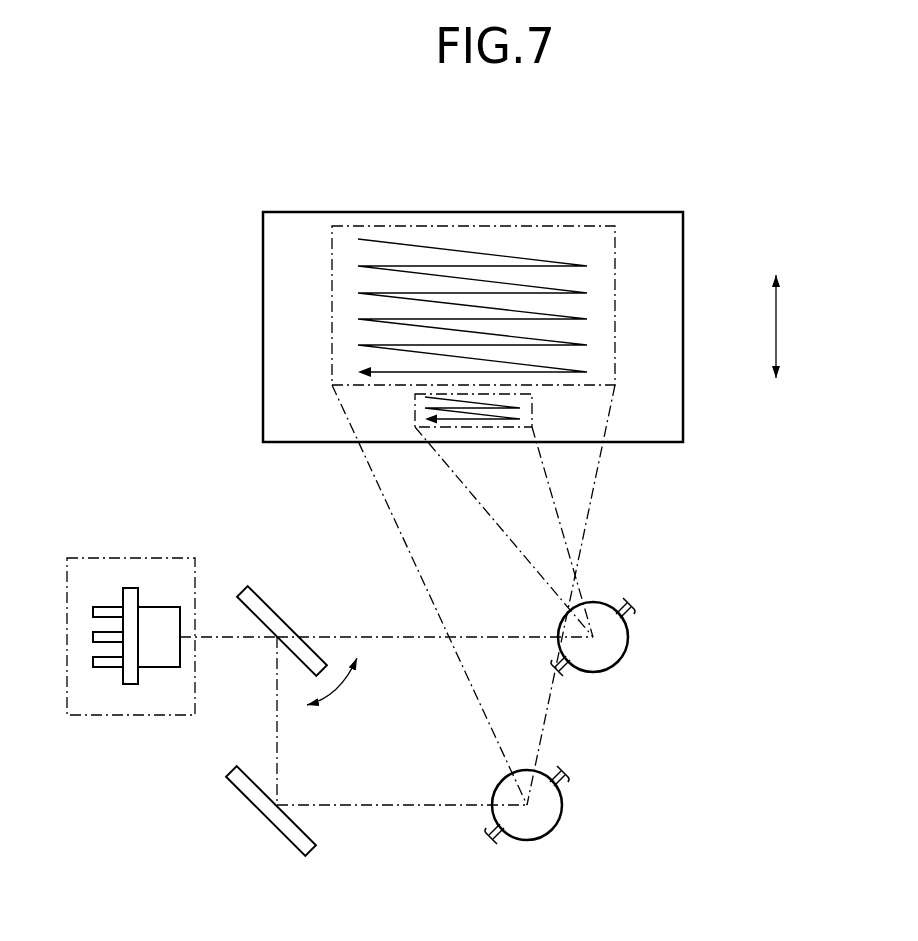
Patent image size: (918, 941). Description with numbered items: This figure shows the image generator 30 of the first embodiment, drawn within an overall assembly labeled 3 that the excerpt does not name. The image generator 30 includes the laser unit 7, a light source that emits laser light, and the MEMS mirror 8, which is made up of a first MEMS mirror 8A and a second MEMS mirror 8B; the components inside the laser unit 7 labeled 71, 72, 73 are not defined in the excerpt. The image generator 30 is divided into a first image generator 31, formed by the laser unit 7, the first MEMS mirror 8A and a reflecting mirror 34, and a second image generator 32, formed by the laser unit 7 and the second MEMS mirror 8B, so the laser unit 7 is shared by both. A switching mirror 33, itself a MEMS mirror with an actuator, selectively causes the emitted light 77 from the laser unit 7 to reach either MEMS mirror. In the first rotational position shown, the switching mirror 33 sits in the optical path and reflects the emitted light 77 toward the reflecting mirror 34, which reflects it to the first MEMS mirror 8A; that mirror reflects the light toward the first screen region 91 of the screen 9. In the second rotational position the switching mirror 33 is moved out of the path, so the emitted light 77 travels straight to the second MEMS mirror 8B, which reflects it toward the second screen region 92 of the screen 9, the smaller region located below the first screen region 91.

The image display device (projector) 3 is at (233, 152).
The image generator 30 is at (177, 270).
The screen 9 is at (653, 212).
The first screen region 91 is at (535, 226).
The second screen region 92 is at (532, 406).
The laser unit 7 is at (87, 558).
The first light source 71 is at (151, 586).
The second light source 72 is at (151, 586).
The third light source 73 is at (130, 587).
The emitted light 77 is at (224, 640).
The switching mirror 33 is at (263, 593).
The reflecting mirror 34 is at (265, 822).
The second image generator 32 is at (395, 636).
The first image generator 31 is at (402, 803).
The MEMS mirror 8 is at (727, 615).
The first MEMS mirror 8A is at (563, 795).
The second MEMS mirror 8B is at (630, 620).